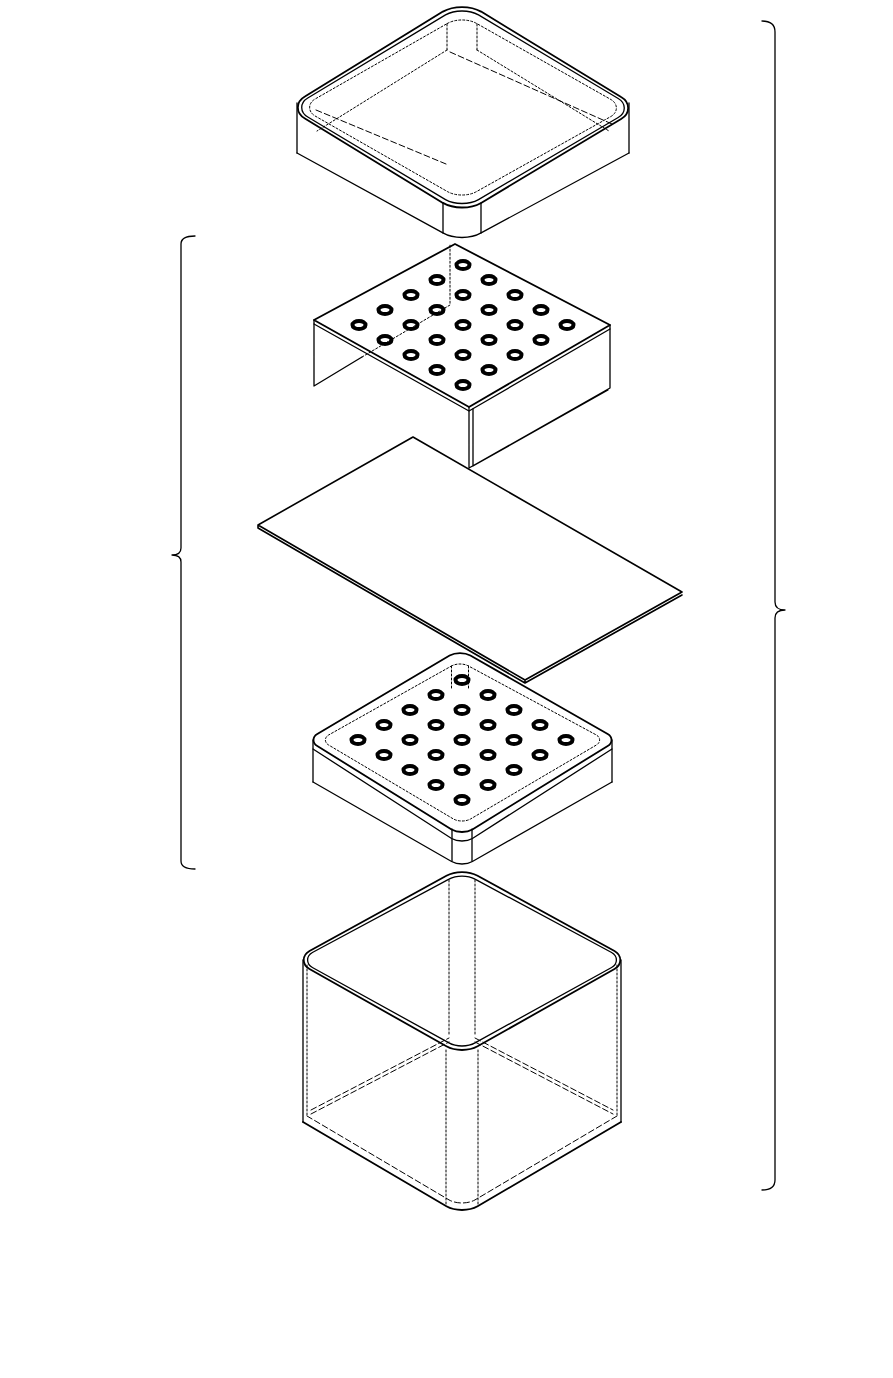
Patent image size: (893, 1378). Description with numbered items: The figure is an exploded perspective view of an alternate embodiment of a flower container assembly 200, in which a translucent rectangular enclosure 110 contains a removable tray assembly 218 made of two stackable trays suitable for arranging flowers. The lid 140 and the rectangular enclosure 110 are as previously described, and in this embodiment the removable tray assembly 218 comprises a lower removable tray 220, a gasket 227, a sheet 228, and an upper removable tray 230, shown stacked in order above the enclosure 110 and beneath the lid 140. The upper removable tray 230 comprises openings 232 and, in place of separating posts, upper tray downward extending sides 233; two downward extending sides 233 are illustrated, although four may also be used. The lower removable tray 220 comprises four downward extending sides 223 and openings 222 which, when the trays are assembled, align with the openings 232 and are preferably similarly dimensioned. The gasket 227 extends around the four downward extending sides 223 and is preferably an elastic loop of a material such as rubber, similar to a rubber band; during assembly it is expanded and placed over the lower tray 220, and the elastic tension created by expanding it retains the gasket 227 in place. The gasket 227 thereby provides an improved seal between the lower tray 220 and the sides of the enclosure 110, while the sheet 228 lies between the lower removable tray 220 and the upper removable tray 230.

The flower container assembly 200 is at (192, 122).
The lid 140 is at (631, 136).
The removable tray assembly 218 is at (134, 438).
The upper removable tray 230 is at (605, 318).
The openings 232 is at (520, 299).
The upper tray downward extending sides 233 is at (540, 415).
The sheet 228 is at (272, 512).
The lower removable tray 220 is at (604, 731).
The openings 222 is at (542, 723).
The downward extending sides 223 is at (382, 802).
The gasket 227 is at (345, 776).
The rectangular enclosure 110 is at (622, 968).